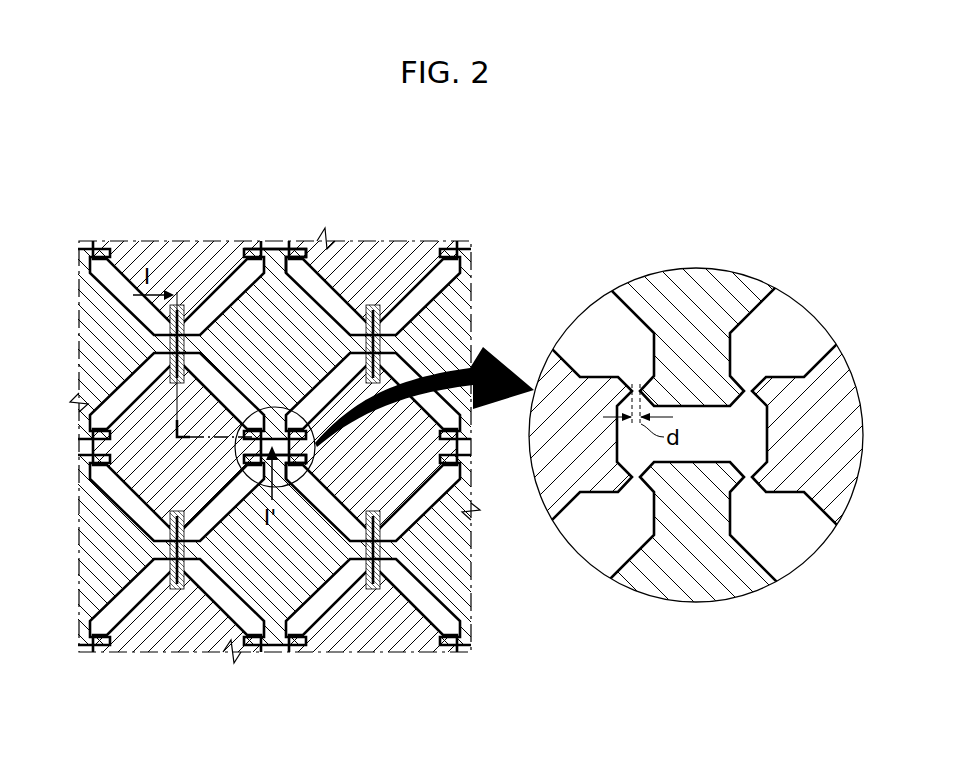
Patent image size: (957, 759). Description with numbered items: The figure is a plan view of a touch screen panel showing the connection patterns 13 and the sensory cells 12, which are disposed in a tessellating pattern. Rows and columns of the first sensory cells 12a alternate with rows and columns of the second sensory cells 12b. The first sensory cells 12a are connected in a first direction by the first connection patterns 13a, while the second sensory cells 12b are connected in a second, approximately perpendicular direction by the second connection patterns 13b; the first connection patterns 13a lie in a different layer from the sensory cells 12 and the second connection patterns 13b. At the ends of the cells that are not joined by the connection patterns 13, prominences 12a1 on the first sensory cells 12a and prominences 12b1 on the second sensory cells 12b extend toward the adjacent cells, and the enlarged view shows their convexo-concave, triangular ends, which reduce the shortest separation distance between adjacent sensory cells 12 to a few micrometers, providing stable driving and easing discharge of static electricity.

The sensory cells 12 is at (395, 167).
The first sensory cells 12a is at (299, 327).
The second sensory cells 12b is at (300, 325).
The prominences 12a1 is at (272, 265).
The prominences 12b1 is at (307, 465).
The connection patterns 13 is at (137, 157).
The first connection patterns 13a is at (167, 335).
The second connection patterns 13b is at (200, 405).